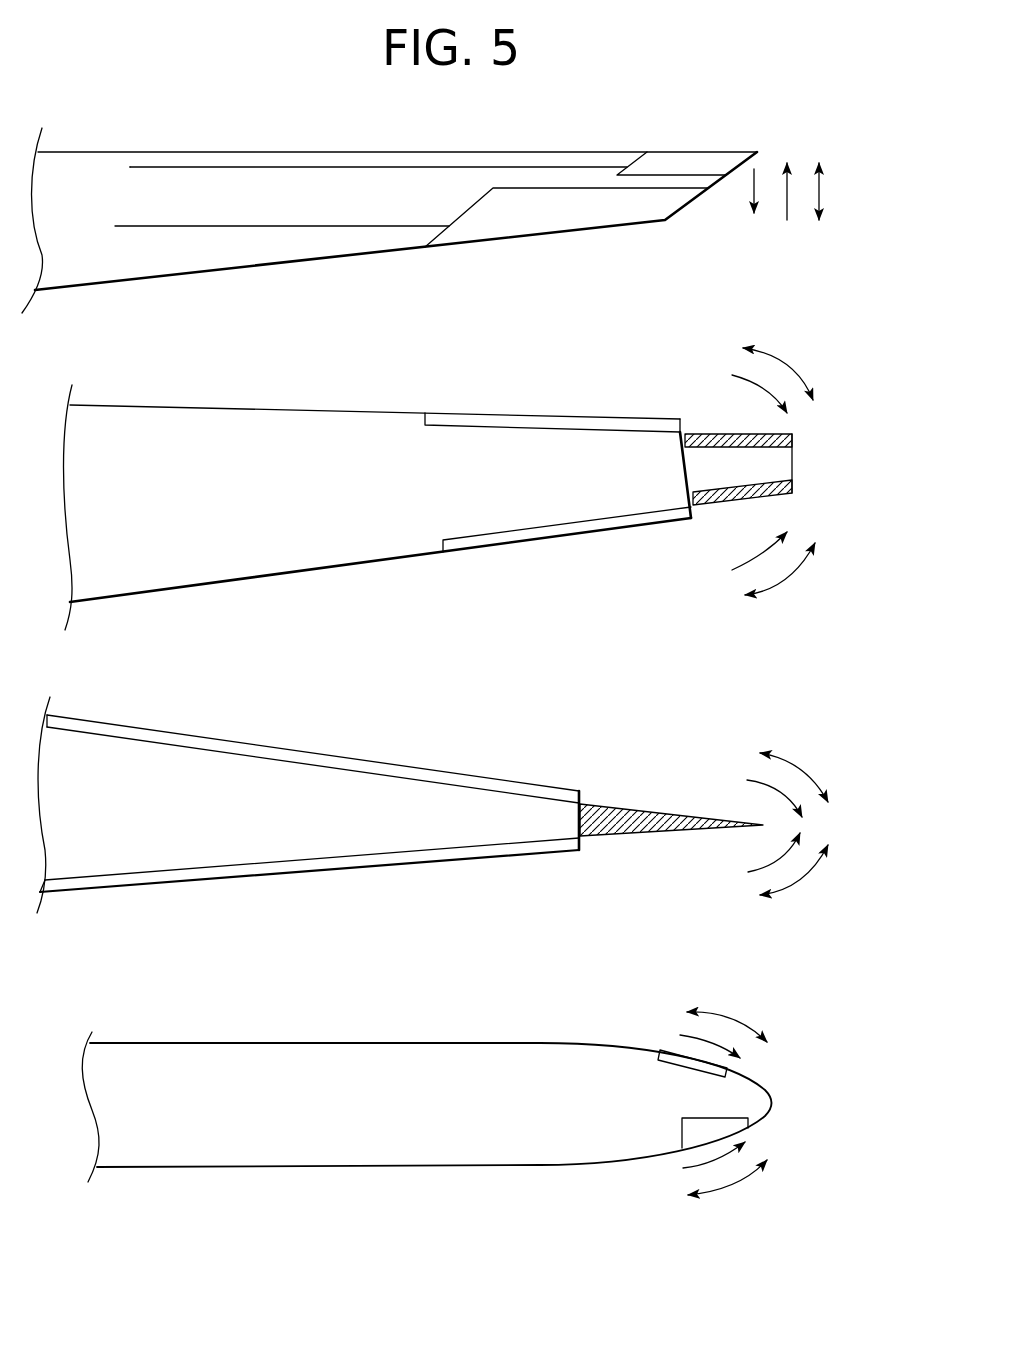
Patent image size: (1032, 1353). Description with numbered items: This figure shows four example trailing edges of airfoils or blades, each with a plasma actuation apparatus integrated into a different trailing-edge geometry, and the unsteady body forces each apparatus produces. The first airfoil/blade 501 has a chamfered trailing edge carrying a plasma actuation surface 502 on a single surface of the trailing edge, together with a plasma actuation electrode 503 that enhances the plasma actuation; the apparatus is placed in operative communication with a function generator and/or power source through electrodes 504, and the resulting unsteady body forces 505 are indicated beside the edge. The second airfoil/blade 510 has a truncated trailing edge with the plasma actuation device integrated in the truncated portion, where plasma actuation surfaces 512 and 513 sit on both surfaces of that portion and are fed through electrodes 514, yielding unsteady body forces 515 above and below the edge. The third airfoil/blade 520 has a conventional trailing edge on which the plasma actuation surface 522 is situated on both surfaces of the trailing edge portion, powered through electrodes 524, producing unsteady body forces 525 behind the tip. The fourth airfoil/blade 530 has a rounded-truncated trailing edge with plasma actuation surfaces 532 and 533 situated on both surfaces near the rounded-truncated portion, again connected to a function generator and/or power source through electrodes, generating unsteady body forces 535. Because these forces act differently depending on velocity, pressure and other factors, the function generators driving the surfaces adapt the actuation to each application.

The airfoil/blade 501 is at (197, 142).
The plasma actuation surface 502 is at (672, 150).
The plasma actuation electrode 503 is at (520, 240).
The electrodes 504 is at (148, 168).
The unsteady body forces 505 is at (840, 155).
The airfoil/blade 510 is at (243, 395).
The plasma actuation surface 512 is at (730, 433).
The plasma actuation surface 513 is at (740, 503).
The electrodes 514 is at (502, 537).
The unsteady body forces 515 is at (760, 322).
The airfoil/blade 520 is at (188, 715).
The plasma actuation surface 522 is at (598, 802).
The electrodes 524 is at (350, 857).
The unsteady body forces 525 is at (838, 740).
The airfoil/blade 530 is at (568, 1040).
The plasma actuation surface 532 is at (648, 1055).
The plasma actuation surface 533 is at (682, 1133).
The unsteady body forces 535 is at (803, 1008).